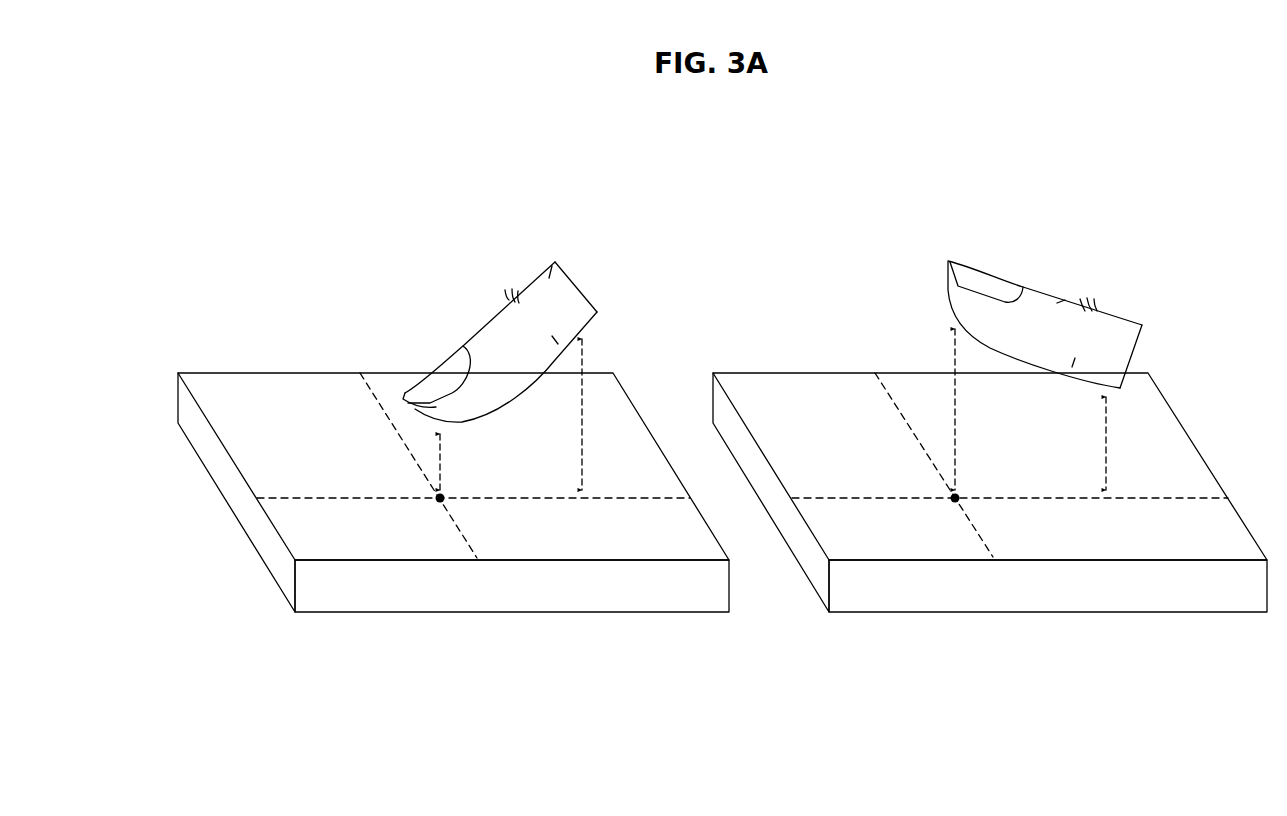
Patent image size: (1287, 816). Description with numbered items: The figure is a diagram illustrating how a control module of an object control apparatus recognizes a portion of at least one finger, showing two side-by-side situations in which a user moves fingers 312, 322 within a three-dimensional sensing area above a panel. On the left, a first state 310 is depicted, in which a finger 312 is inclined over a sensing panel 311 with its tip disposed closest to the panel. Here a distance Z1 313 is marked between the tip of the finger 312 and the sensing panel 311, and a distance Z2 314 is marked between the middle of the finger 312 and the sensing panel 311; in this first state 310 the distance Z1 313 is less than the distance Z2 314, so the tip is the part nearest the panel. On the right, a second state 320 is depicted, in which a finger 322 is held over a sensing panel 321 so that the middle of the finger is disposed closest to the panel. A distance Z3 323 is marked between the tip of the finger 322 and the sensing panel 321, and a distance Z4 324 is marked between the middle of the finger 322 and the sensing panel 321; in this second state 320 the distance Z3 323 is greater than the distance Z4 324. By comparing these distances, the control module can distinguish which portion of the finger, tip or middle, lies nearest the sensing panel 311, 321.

The first state 310 is at (382, 207).
The sensing panel 311 is at (363, 593).
The finger 312 is at (557, 262).
The distance Z1 313 is at (477, 460).
The distance Z2 314 is at (613, 373).
The second state 320 is at (918, 207).
The sensing panel 321 is at (900, 593).
The finger 322 is at (1063, 302).
The distance Z3 323 is at (977, 385).
The distance Z4 324 is at (1125, 425).